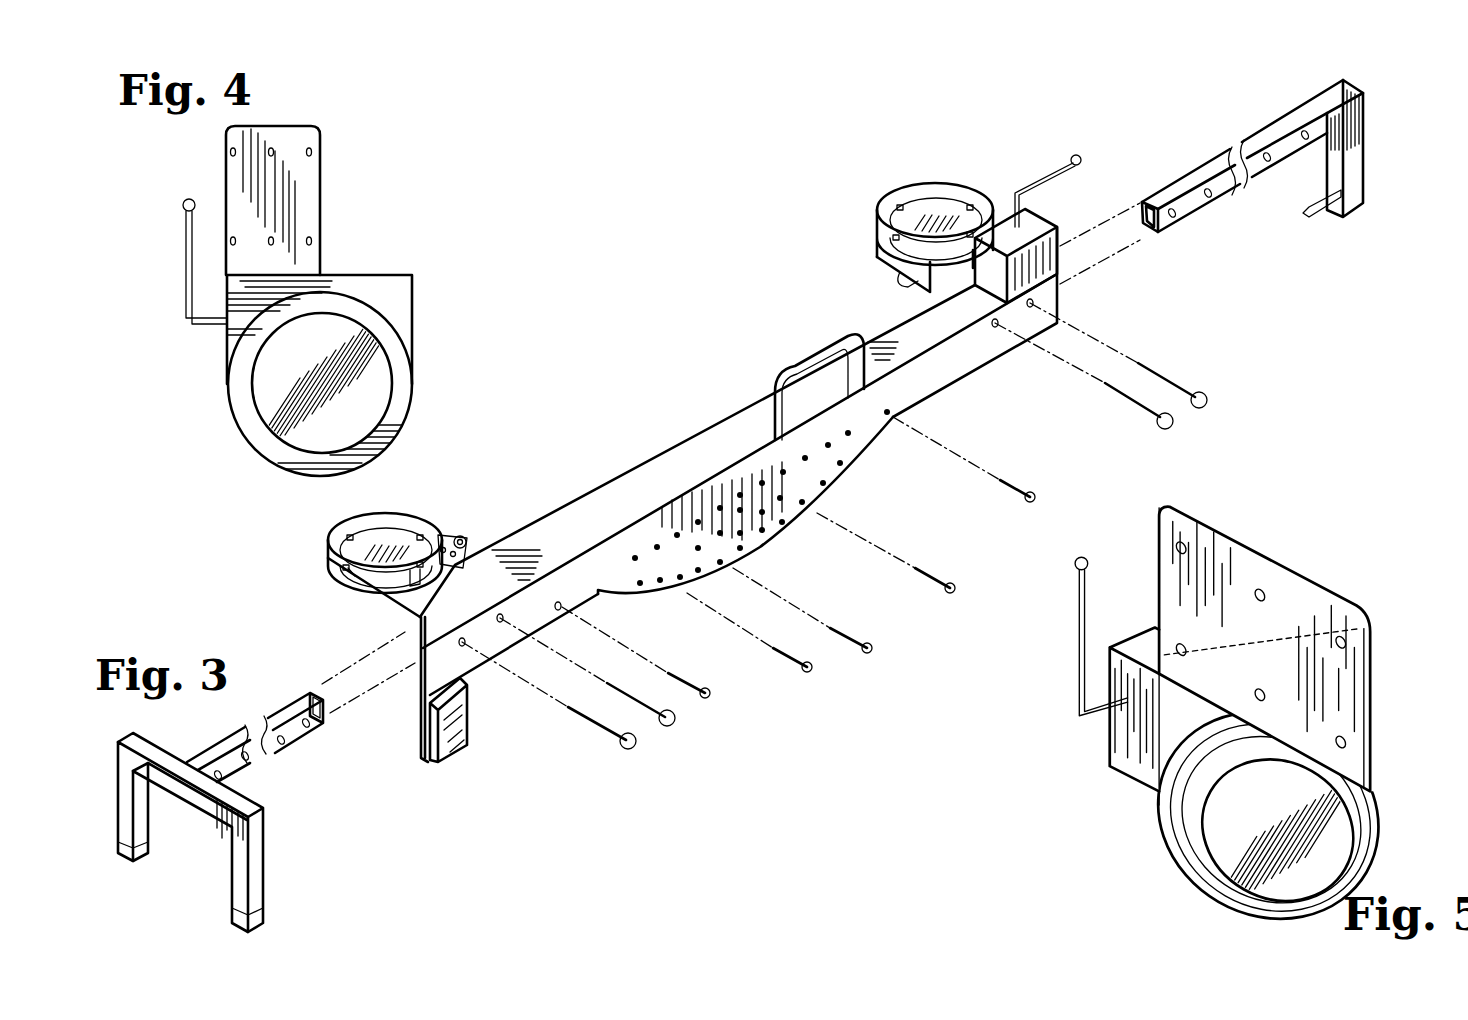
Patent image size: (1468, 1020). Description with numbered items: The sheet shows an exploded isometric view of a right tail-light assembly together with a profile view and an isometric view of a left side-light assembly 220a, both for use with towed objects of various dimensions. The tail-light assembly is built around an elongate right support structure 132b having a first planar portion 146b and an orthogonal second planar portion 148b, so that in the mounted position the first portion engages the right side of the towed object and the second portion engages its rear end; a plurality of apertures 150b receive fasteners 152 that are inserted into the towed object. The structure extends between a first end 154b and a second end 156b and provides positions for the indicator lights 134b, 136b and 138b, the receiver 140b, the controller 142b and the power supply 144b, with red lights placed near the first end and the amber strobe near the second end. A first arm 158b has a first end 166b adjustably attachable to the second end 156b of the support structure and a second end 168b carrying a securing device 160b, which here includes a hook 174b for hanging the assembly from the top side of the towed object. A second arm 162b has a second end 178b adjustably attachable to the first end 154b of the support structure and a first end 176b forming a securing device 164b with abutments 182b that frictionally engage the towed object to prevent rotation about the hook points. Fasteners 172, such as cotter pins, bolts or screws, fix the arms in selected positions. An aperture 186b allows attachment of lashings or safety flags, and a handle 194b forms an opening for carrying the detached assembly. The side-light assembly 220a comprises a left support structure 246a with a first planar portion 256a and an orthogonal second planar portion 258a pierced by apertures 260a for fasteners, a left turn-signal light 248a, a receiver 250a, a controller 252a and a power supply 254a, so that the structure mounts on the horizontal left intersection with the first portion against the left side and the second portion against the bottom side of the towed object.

In FIG. 3, the right support structure 132b is at (546, 480).
In FIG. 3, the indicator light 134b is at (450, 748).
In FIG. 3, the indicator light 136b is at (395, 533).
In FIG. 3, the indicator light 138b is at (918, 215).
In FIG. 3, the receiver 140b is at (1080, 156).
In FIG. 3, the controller 142b is at (1038, 222).
In FIG. 3, the power supply 144b is at (992, 237).
In FIG. 3, the first planar portion 146b is at (958, 374).
In FIG. 3, the second planar portion 148b is at (705, 445).
In FIG. 3, the apertures 150b is at (808, 503).
In FIG. 3, the fasteners 152 is at (890, 596).
In FIG. 3, the first end 154b is at (302, 600).
In FIG. 3, the second end 156b is at (952, 156).
In FIG. 3, the first arm 158b is at (1246, 110).
In FIG. 3, the securing device 160b is at (1378, 148).
In FIG. 3, the second arm 162b is at (277, 796).
In FIG. 3, the securing device 164b is at (276, 903).
In FIG. 3, the first end 166b is at (1143, 230).
In FIG. 3, the second end 168b is at (1348, 83).
In FIG. 3, the fasteners 172 is at (637, 742).
In FIG. 3, the hook 174b is at (1330, 222).
In FIG. 3, the first end 176b is at (197, 808).
In FIG. 3, the second end 178b is at (325, 708).
In FIG. 3, the abutments 182b is at (228, 917).
In FIG. 3, the aperture 186b is at (466, 540).
In FIG. 3, the handle 194b is at (808, 353).
In FIG. 4, the left side-light assembly 220a is at (377, 139).
In FIG. 5, the left side-light assembly 220a is at (1100, 854).
In FIG. 4, the left support structure 246a is at (177, 179).
In FIG. 5, the left support structure 246a is at (1296, 556).
In FIG. 4, the left turn-signal light 248a is at (266, 388).
In FIG. 5, the left turn-signal light 248a is at (1323, 807).
In FIG. 4, the receiver 250a is at (181, 237).
In FIG. 5, the receiver 250a is at (1072, 682).
In FIG. 5, the controller 252a is at (1113, 740).
In FIG. 5, the power supply 254a is at (1137, 763).
In FIG. 4, the first planar portion 256a is at (322, 177).
In FIG. 5, the first planar portion 256a is at (1250, 552).
In FIG. 4, the second planar portion 258a is at (346, 270).
In FIG. 5, the second planar portion 258a is at (1327, 700).
In FIG. 4, the apertures 260a is at (272, 154).
In FIG. 5, the apertures 260a is at (1168, 543).